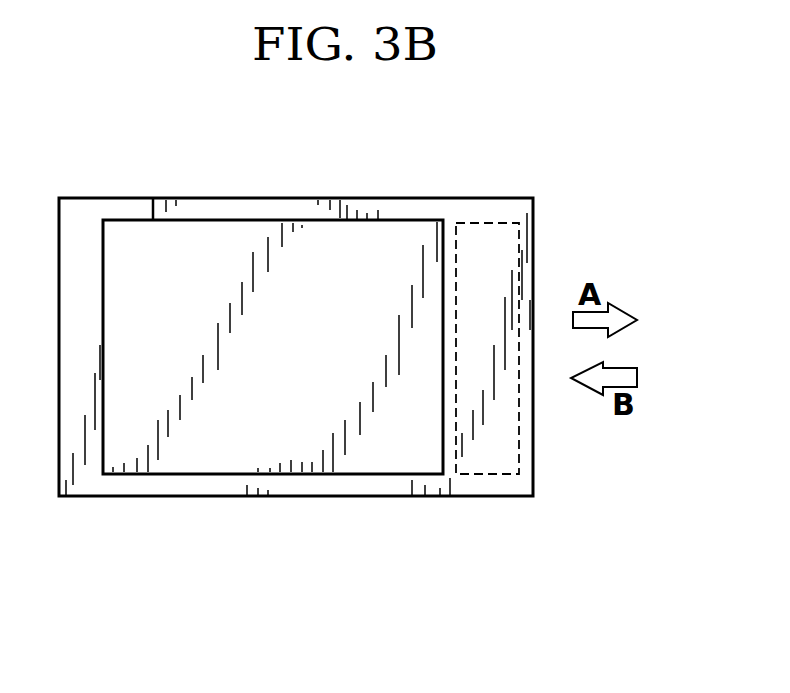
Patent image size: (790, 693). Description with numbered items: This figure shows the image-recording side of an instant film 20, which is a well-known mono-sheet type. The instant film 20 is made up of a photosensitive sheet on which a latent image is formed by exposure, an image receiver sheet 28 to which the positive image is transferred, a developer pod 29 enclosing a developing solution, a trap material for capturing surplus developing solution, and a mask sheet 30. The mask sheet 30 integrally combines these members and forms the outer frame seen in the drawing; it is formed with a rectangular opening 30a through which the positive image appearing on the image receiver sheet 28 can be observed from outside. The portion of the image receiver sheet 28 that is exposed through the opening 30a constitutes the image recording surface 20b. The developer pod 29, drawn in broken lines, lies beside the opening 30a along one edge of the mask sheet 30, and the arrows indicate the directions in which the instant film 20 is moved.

The instant film 20 is at (123, 533).
The image recording surface 20b is at (227, 458).
The image receiver sheet 28 is at (406, 457).
The developer pod 29 is at (487, 222).
The mask sheet 30 is at (79, 213).
The opening 30a is at (312, 222).